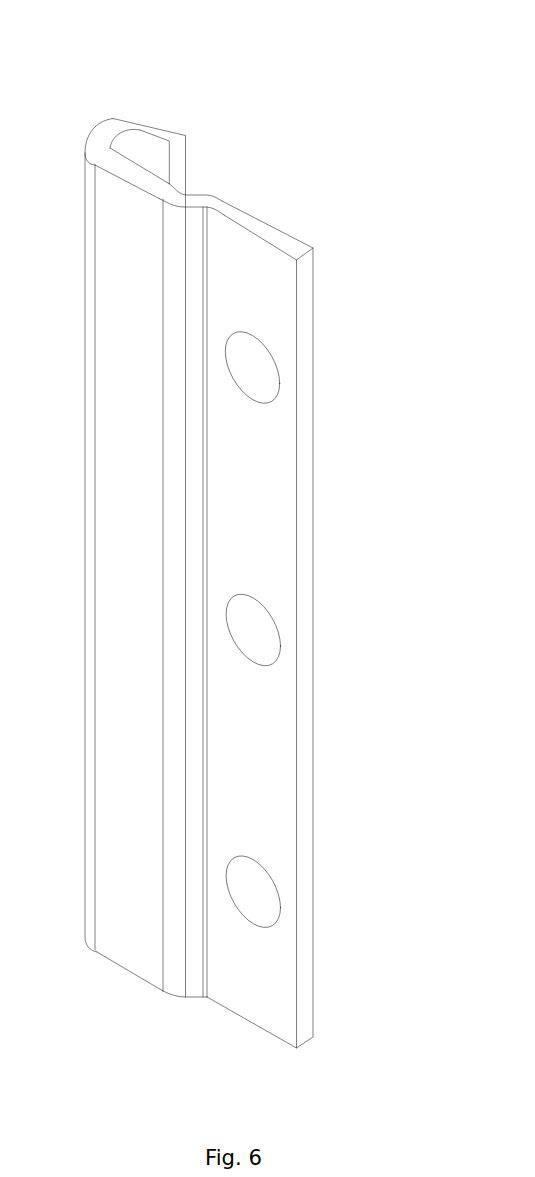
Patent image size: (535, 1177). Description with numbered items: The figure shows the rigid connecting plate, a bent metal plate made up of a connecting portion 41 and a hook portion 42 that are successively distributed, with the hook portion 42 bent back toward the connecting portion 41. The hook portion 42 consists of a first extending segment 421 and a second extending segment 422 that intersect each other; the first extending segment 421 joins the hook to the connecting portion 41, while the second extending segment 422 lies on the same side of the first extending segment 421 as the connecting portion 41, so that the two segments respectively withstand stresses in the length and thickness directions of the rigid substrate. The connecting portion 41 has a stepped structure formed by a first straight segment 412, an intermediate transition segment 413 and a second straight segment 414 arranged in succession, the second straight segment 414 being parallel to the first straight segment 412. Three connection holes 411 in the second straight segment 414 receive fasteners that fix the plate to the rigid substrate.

The connecting portion 41 is at (229, 545).
The connection hole 411 is at (263, 367).
The first straight segment 412 is at (142, 953).
The intermediate transition segment 413 is at (193, 978).
The second straight segment 414 is at (304, 646).
The hook portion 42 is at (122, 498).
The first extending segment 421 is at (122, 128).
The second extending segment 422 is at (167, 127).